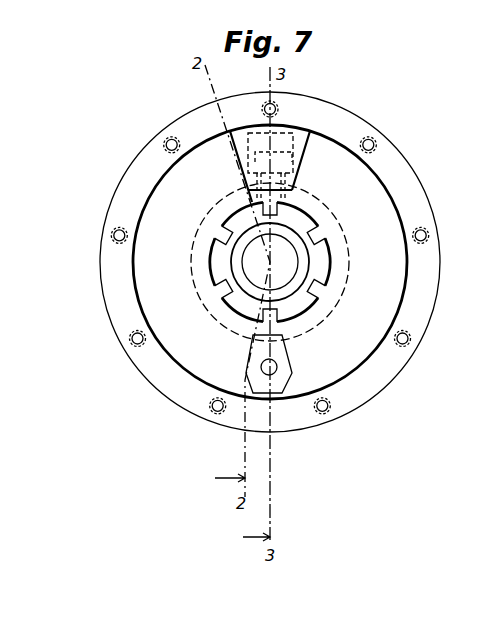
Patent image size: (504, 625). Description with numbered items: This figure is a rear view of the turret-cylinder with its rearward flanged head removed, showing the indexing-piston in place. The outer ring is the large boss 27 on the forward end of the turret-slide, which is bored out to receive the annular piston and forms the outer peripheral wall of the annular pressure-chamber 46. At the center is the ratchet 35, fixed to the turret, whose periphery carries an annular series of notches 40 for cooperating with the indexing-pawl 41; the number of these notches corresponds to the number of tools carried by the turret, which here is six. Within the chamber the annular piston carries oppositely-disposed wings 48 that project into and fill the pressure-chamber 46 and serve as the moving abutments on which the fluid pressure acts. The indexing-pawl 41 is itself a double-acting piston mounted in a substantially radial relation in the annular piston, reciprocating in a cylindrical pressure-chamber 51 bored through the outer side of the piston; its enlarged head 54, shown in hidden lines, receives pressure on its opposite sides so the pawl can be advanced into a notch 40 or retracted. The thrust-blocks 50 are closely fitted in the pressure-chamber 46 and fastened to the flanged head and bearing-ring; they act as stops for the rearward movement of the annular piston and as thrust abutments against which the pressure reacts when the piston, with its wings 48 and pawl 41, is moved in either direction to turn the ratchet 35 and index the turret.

The boss 27 is at (407, 180).
The annular pressure-chamber 46 is at (160, 283).
The ratchet 35 is at (323, 270).
The notches 40 is at (318, 233).
The indexing-pawl 41 is at (277, 207).
The wings 48 is at (238, 168).
The pressure-chamber 51 is at (293, 145).
The enlarged head 54 is at (287, 163).
The thrust-blocks 50 is at (275, 385).